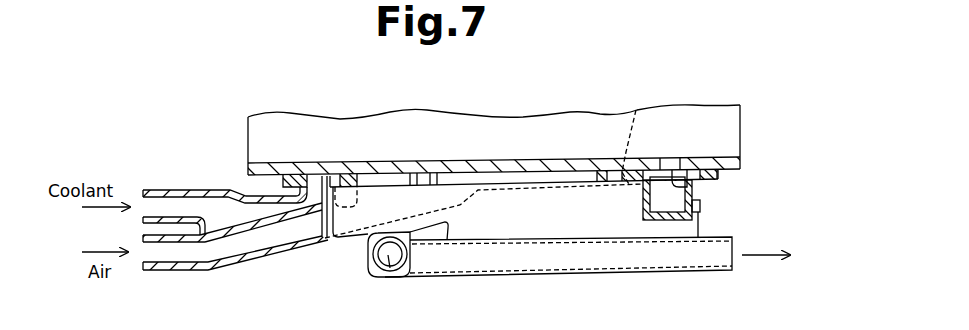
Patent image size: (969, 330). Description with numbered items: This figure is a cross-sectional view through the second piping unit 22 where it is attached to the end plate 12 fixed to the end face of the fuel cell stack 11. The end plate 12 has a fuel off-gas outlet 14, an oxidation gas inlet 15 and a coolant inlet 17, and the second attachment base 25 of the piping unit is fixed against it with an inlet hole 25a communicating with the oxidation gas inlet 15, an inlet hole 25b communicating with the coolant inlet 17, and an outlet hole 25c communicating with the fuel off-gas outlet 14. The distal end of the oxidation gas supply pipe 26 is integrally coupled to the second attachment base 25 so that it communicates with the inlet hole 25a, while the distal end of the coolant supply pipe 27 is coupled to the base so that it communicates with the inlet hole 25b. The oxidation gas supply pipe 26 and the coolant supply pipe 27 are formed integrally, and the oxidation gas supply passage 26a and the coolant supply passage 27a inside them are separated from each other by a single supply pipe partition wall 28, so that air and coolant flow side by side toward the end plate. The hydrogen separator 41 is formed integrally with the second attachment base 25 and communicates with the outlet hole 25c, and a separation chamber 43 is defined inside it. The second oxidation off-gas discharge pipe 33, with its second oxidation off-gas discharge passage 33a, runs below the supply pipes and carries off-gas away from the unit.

The fuel cell stack 11 is at (730, 117).
The end plate 12 is at (730, 160).
The fuel off-gas outlet 14 is at (668, 165).
The oxidation gas inlet 15 is at (358, 168).
The coolant inlet 17 is at (322, 170).
The second piping unit 22 is at (492, 281).
The second attachment base 25 is at (720, 177).
The inlet hole 25a is at (632, 137).
The inlet hole 25b is at (325, 173).
The outlet hole 25c is at (690, 190).
The oxidation gas supply pipe 26 is at (203, 269).
The oxidation gas supply passage 26a is at (310, 238).
The coolant supply pipe 27 is at (168, 188).
The coolant supply passage 27a is at (230, 208).
The supply pipe partition wall 28 is at (245, 238).
The second oxidation off-gas discharge pipe 33 is at (561, 278).
The second oxidation off-gas discharge passage 33a is at (390, 268).
The hydrogen separator 41 is at (698, 216).
The separation chamber 43 is at (662, 195).